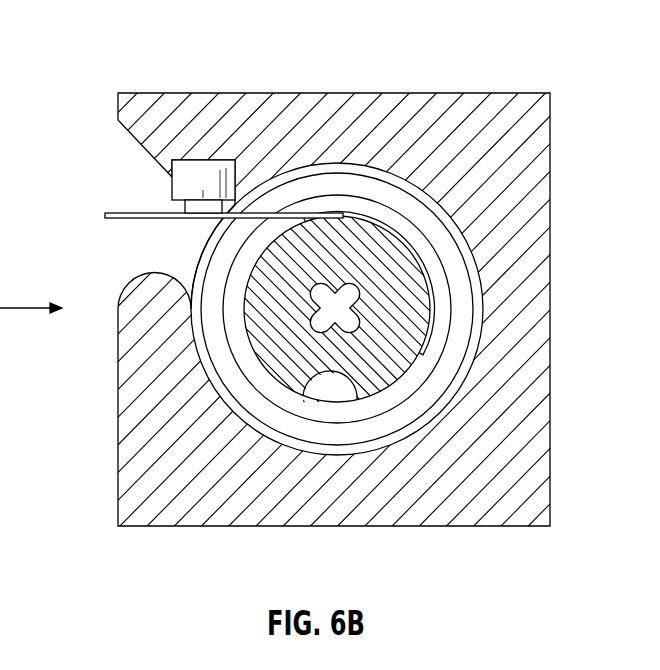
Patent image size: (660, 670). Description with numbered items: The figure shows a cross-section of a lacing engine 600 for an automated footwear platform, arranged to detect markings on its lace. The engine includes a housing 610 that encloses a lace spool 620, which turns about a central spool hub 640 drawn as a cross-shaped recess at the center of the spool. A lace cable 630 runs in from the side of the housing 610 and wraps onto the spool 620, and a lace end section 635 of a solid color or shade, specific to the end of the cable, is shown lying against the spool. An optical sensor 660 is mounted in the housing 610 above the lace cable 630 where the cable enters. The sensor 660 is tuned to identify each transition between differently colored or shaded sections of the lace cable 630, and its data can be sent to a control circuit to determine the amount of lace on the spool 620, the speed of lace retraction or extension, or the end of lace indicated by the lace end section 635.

The lacing engine 600 is at (85, 49).
The housing 610 is at (118, 110).
The lace spool 620 is at (199, 277).
The lace cable 630 is at (113, 208).
The lace end section 635 is at (167, 215).
The spool hub 640 is at (353, 304).
The optical sensor 660 is at (200, 160).